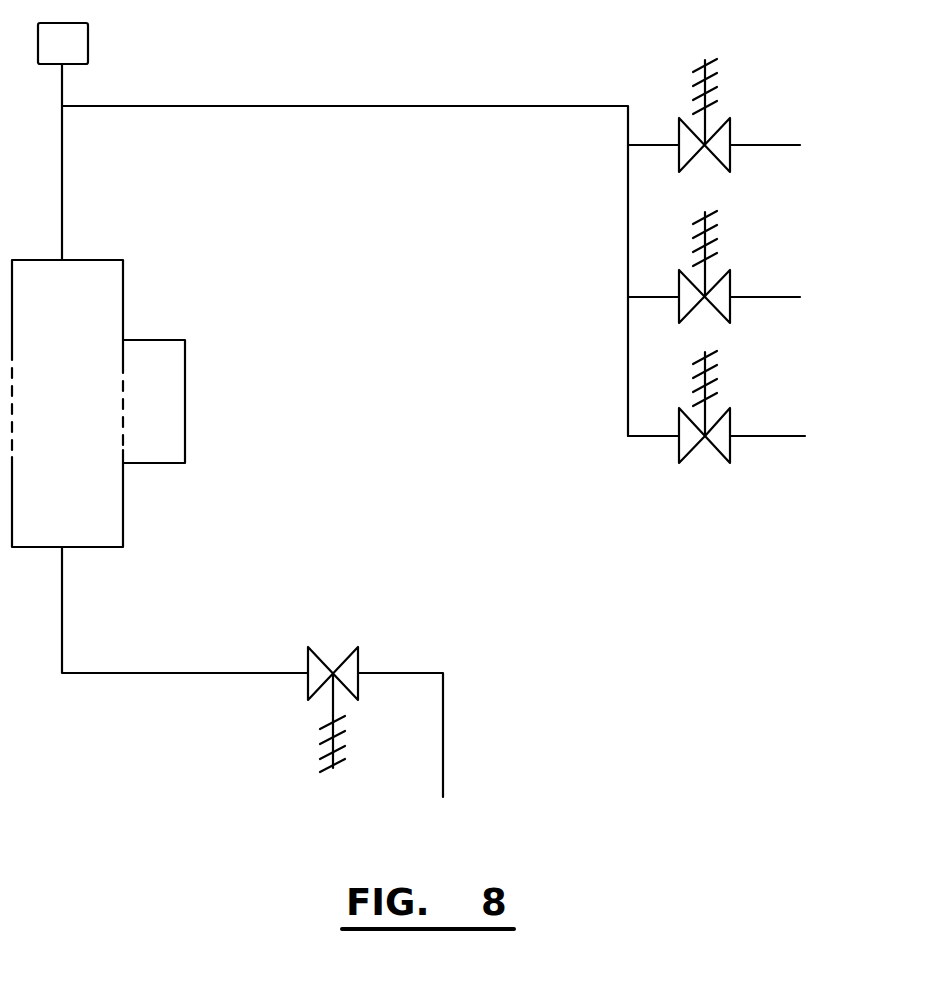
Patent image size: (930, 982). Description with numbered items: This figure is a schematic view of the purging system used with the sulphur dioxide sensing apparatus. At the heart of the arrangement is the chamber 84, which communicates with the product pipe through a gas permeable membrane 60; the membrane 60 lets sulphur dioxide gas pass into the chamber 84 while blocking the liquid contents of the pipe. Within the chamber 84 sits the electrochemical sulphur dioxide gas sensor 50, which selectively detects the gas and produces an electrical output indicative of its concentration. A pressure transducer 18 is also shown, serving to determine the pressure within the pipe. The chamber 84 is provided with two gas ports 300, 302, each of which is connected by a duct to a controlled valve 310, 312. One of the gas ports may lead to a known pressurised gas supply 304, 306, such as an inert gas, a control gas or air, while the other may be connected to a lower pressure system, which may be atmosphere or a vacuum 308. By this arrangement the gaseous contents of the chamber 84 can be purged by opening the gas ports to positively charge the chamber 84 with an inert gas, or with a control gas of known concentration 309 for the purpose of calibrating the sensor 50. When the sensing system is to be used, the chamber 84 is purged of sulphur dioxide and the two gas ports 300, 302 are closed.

The pressure transducer 18 is at (78, 44).
The gas port 300 is at (64, 258).
The gas permeable membrane 60 is at (12, 387).
The chamber 84 is at (105, 510).
The sulphur dioxide gas sensor 50 is at (167, 418).
The gas port 302 is at (65, 550).
The controlled valve 310 is at (358, 660).
The vacuum 308 is at (443, 780).
The pressurised gas supply 304 is at (780, 145).
The pressurised gas supply 306 is at (780, 297).
The control gas of known concentration 309 is at (778, 436).
The controlled valve 312 is at (716, 453).